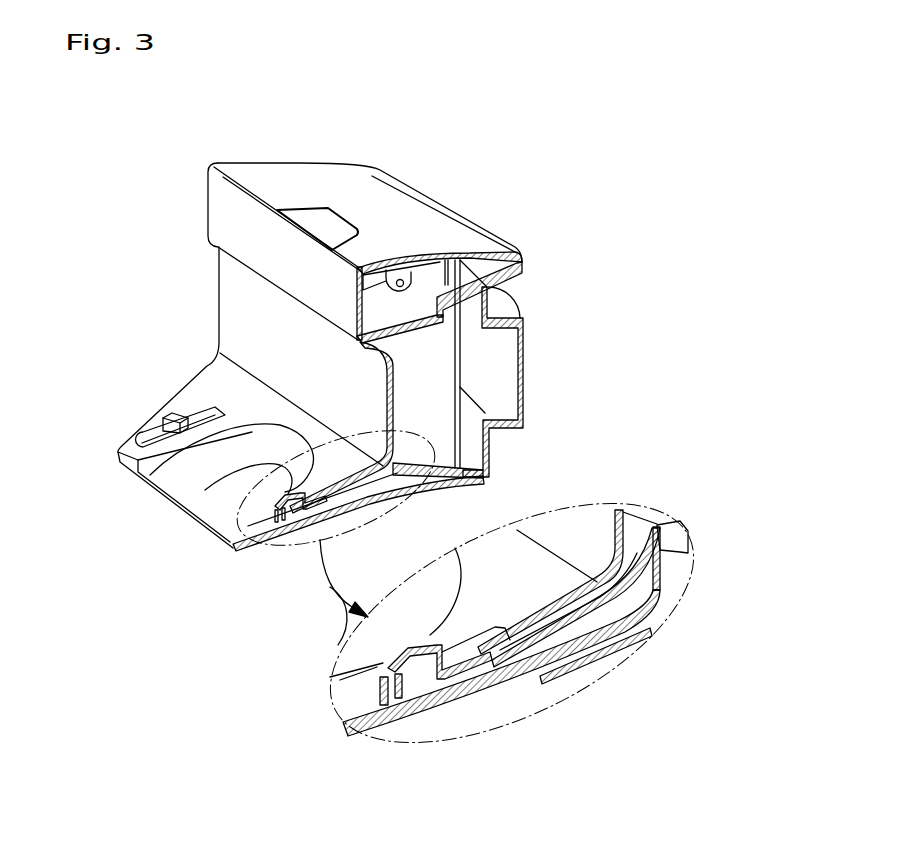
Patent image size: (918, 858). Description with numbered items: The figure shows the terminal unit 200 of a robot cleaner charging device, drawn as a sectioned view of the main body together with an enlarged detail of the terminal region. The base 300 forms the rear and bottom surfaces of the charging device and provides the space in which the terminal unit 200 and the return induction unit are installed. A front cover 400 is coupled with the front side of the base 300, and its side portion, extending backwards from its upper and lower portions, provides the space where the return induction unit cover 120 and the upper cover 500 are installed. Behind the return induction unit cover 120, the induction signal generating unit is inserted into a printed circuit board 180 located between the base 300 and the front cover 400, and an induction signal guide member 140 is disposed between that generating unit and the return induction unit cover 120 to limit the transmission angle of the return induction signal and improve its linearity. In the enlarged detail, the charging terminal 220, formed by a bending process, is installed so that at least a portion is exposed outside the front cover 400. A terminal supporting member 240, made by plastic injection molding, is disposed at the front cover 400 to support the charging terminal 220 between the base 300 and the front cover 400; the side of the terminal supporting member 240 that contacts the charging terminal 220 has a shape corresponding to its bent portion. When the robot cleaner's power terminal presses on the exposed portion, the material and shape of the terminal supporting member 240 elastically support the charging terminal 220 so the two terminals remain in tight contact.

The return induction unit cover 120 is at (221, 213).
The induction signal guide member 140 is at (430, 287).
The printed circuit board 180 is at (452, 370).
The terminal unit 200 is at (283, 497).
The charging terminal 220 is at (397, 650).
The terminal supporting member 240 is at (632, 600).
The base 300 is at (507, 350).
The front cover 400 is at (233, 297).
The upper cover 500 is at (354, 190).